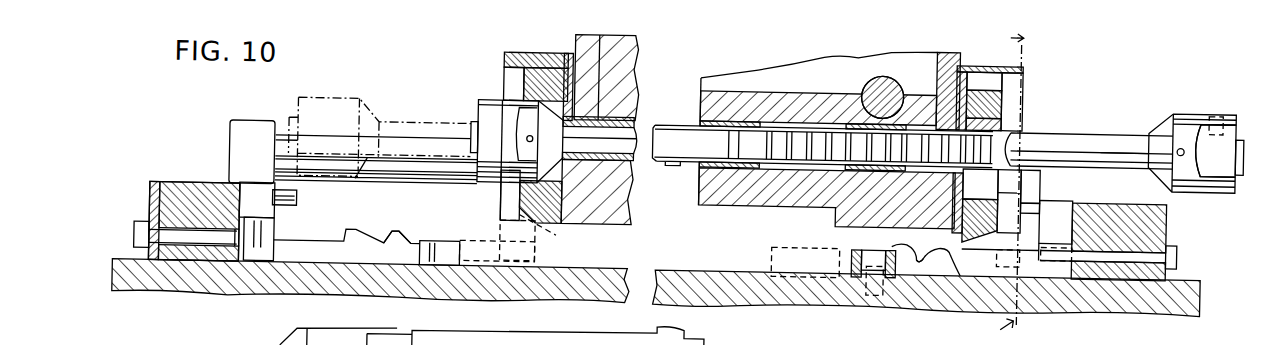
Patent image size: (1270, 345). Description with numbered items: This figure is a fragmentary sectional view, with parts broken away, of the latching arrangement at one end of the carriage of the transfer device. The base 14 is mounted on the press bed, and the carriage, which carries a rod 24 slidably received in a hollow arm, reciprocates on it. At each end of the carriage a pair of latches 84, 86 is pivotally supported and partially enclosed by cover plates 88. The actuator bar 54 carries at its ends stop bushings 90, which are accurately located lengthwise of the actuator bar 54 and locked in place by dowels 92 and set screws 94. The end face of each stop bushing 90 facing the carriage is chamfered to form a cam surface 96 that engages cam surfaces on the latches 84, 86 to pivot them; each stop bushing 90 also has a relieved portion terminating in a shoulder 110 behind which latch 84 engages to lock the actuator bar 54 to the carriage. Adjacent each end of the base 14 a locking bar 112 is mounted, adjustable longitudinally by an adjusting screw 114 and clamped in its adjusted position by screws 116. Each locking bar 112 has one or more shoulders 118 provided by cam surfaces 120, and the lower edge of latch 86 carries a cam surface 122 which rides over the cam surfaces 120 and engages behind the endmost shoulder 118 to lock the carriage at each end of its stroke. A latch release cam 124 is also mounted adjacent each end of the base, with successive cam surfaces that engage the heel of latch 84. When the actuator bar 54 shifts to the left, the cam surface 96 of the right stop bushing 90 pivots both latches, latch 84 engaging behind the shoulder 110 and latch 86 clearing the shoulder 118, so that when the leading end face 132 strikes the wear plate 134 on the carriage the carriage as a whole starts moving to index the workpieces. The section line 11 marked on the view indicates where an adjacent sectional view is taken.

The section line 11- 11 is at (1002, 186).
The base 14 is at (1148, 293).
The rod 24 is at (888, 79).
The actuator bar 54 is at (1082, 128).
The latch 84 is at (512, 62).
The latch 86 is at (558, 86).
The cover plate 88 is at (983, 61).
The stop bushing 90 is at (498, 105).
The dowel 92 is at (1182, 138).
The set screw 94 is at (1213, 106).
The cam surface 96 is at (1165, 110).
The shoulder 110 is at (1219, 150).
The locking bar 112 is at (327, 250).
The adjusting screw 114 is at (146, 238).
The screw 116 is at (862, 247).
The shoulder 118 is at (347, 236).
The cam surface 120 is at (383, 236).
The cam surface 122 is at (981, 221).
The latch release cam 124 is at (536, 261).
The leading end face 132 is at (1148, 142).
The wear plate 134 is at (982, 184).